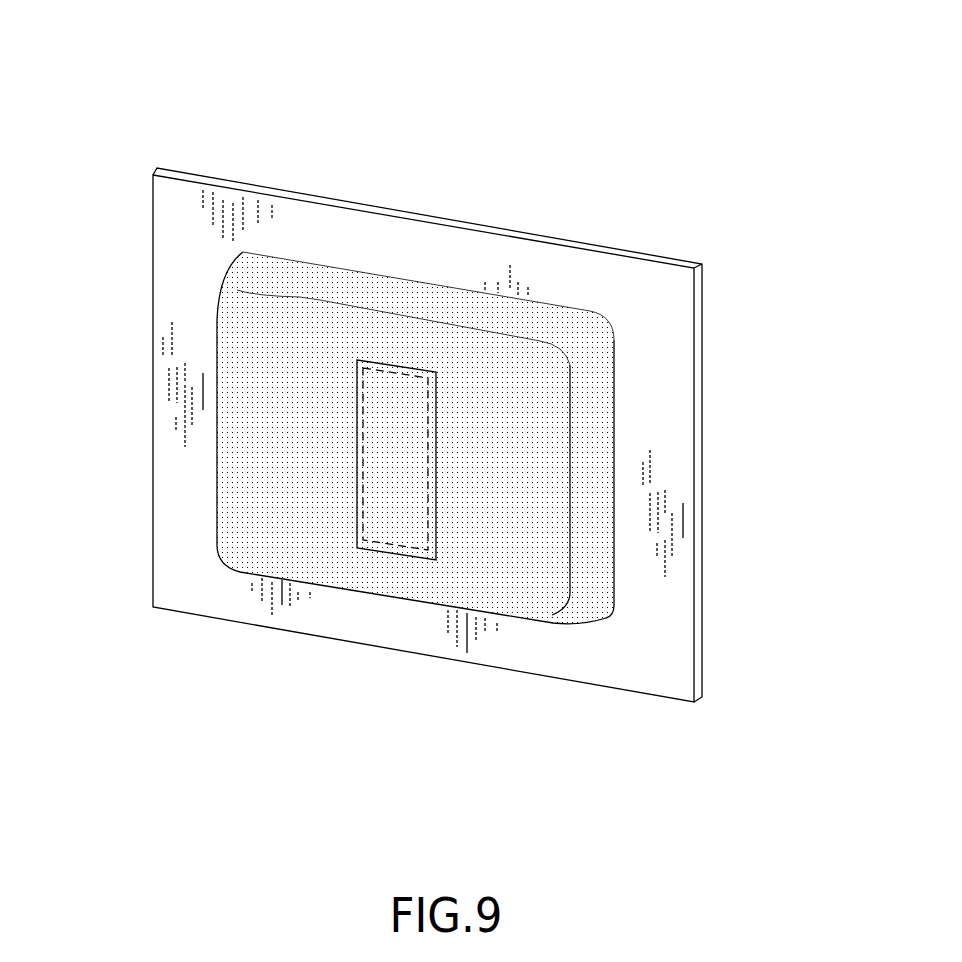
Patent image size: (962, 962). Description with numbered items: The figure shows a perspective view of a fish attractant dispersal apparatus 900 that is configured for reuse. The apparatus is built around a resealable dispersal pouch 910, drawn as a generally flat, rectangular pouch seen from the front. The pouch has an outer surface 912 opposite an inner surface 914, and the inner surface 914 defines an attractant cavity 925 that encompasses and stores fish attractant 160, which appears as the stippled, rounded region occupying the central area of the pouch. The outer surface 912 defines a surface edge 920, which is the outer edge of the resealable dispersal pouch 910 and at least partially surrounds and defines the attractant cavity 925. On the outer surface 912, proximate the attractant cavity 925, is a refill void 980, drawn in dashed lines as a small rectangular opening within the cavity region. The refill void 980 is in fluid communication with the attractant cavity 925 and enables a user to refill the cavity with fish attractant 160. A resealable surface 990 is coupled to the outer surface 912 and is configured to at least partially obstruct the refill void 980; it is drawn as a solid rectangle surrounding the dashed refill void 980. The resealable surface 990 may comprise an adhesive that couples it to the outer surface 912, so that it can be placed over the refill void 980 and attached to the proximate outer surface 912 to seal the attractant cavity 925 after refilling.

The fish attractant dispersal apparatus 900 is at (404, 365).
The resealable dispersal pouch 910 is at (396, 435).
The outer surface 912 is at (178, 592).
The inner surface 914 is at (292, 574).
The surface edge 920 is at (665, 282).
The attractant cavity 925 is at (353, 573).
The fish attractant 160 is at (471, 485).
The refill void 980 is at (423, 372).
The resealable surface 990 is at (427, 439).